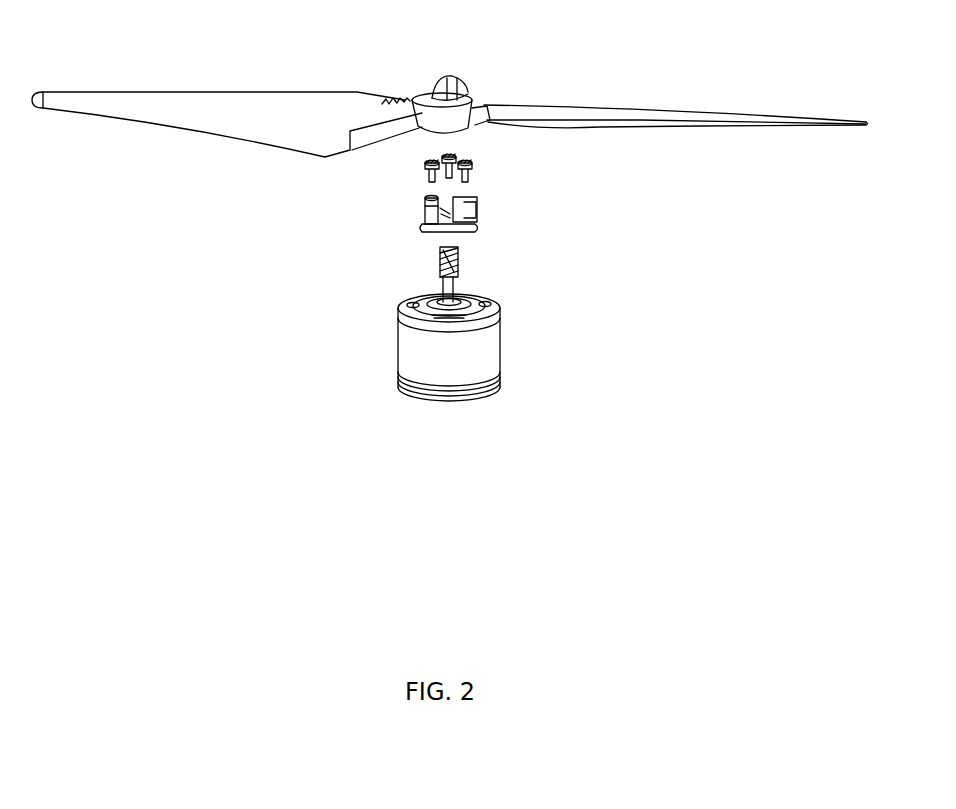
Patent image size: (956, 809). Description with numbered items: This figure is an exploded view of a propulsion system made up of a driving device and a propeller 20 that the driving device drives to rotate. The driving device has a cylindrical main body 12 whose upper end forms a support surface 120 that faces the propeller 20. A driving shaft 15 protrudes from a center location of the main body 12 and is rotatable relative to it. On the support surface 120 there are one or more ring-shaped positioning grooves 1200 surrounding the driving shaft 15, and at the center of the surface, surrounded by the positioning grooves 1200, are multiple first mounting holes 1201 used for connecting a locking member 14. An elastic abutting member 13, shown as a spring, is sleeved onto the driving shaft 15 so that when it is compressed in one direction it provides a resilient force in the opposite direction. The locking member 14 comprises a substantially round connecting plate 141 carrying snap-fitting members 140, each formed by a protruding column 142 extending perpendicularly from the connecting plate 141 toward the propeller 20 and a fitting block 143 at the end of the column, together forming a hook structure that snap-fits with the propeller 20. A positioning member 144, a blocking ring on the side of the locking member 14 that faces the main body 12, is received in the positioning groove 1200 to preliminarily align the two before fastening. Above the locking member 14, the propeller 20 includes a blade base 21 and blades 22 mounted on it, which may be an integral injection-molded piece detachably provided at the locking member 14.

The propeller 20 is at (213, 27).
The blade base 21 is at (405, 99).
The blades 22 is at (237, 107).
The main body 12 is at (418, 362).
The support surface 120 is at (423, 308).
The positioning grooves 1200 is at (462, 318).
The first mounting holes 1201 is at (465, 312).
The elastic abutting member 13 is at (462, 252).
The locking member 14 is at (235, 190).
The snap-fitting member 140 is at (297, 193).
The connecting plate 141 is at (448, 228).
The protruding column 142 is at (427, 220).
The fitting block 143 is at (423, 208).
The positioning member 144 is at (476, 231).
The driving shaft 15 is at (455, 287).